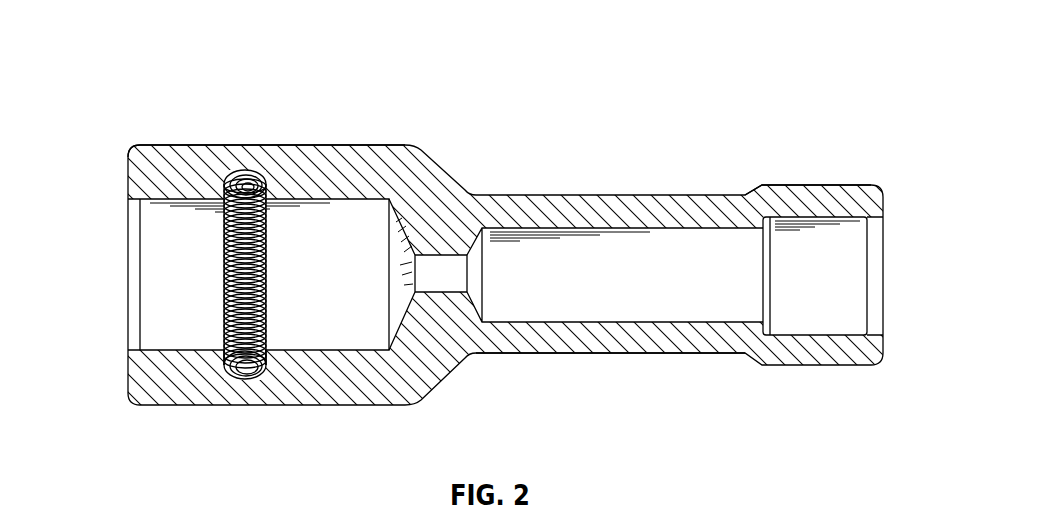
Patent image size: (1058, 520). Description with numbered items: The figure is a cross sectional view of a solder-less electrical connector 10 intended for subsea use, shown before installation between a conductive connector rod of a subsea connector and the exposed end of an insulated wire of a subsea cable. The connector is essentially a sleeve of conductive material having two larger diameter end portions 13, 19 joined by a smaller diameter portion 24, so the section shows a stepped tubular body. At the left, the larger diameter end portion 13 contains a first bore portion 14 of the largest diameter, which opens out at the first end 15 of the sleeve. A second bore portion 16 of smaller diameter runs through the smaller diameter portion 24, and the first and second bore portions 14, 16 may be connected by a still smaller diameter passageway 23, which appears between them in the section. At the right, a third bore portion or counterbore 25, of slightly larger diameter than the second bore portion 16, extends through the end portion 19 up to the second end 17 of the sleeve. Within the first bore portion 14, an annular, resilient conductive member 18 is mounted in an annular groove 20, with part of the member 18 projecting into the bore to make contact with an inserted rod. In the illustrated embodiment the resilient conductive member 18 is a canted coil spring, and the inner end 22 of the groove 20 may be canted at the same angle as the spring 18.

The solder-less electrical connector 10 is at (183, 78).
The larger diameter end portion 13 is at (313, 140).
The first bore portion 14 is at (346, 200).
The first end 15 is at (128, 179).
The second bore portion 16 is at (701, 226).
The second end 17 is at (883, 196).
The annular, resilient conductive member 18 is at (245, 177).
The larger diameter end portion 19 is at (820, 179).
The annular groove 20 is at (230, 378).
The inner end of groove 22 is at (263, 375).
The smaller diameter passageway 23 is at (432, 276).
The smaller diameter portion 24 is at (667, 354).
The third bore portion or counterbore 25 is at (800, 334).